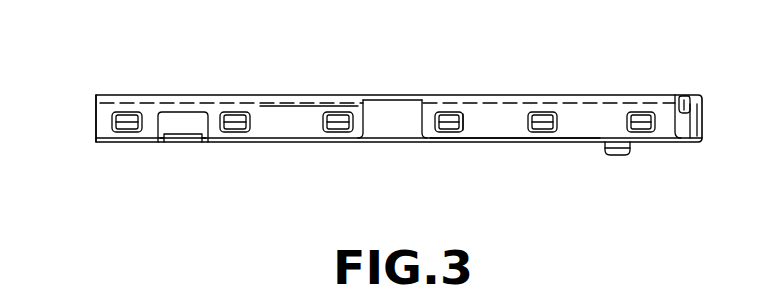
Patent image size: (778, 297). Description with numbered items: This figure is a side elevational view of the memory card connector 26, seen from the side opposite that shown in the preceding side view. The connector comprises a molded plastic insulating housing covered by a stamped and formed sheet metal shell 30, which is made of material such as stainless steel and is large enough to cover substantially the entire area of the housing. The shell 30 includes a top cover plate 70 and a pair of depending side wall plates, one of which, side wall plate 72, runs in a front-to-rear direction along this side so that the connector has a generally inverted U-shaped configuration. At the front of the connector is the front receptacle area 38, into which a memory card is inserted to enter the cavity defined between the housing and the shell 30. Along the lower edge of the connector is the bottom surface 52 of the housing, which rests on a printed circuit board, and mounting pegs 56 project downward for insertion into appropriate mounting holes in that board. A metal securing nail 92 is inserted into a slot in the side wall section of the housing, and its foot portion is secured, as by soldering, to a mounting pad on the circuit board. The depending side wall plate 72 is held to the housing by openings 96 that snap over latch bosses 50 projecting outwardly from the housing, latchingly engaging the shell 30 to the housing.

The memory card connector 26 is at (590, 81).
The metal shell 30 is at (278, 88).
The front receptacle area 38 is at (96, 121).
The latch bosses 50 is at (447, 131).
The bottom surface 52 is at (522, 142).
The mounting pegs 56 is at (617, 155).
The top cover plate 70 is at (347, 95).
The side wall plate 72 is at (303, 115).
The metal securing nail 92 is at (185, 160).
The openings 96 is at (465, 121).